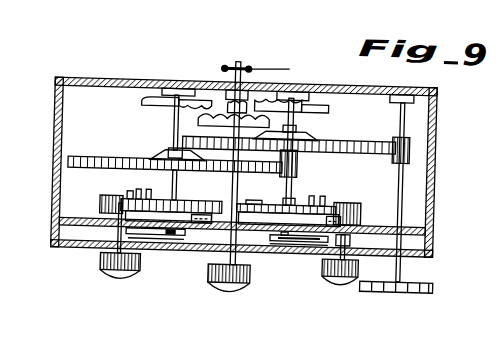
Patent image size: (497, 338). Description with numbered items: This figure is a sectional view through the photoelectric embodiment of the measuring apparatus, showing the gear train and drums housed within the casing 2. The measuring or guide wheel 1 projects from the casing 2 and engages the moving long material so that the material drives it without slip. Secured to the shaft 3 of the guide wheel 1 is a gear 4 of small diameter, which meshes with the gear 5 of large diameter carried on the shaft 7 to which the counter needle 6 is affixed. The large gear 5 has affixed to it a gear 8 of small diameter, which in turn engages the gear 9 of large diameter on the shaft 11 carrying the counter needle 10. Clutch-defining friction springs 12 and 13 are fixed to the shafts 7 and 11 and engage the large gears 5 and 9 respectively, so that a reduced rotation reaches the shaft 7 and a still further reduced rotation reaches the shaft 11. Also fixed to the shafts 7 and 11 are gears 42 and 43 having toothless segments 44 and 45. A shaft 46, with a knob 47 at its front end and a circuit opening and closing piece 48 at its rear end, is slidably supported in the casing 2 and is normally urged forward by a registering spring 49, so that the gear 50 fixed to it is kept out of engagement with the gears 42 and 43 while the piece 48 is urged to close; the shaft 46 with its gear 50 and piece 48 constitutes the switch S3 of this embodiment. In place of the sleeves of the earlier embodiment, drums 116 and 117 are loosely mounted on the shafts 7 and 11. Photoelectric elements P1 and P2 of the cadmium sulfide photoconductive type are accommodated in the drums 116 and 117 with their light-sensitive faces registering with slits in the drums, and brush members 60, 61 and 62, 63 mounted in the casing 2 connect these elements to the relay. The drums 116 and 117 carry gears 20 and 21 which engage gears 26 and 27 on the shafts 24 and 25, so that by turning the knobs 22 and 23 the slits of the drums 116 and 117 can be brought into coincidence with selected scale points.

The measuring or guide wheel 1 is at (383, 290).
The casing 2 is at (437, 127).
The shaft of the guide wheel 3 is at (399, 111).
The gear of small diameter 4 is at (410, 151).
The gear of large diameter 5 is at (360, 151).
The counter needle 6 is at (306, 246).
The shaft 7 is at (302, 114).
The gear of small diameter 8 is at (297, 158).
The gear of large diameter 9 is at (84, 163).
The counter needle 10 is at (160, 237).
The shaft 11 is at (172, 120).
The friction spring 12 is at (305, 131).
The friction spring 13 is at (152, 160).
The gear 20 is at (298, 208).
The gear 21 is at (188, 202).
The knob 22 is at (333, 283).
The knob 23 is at (112, 281).
The shaft 24 is at (346, 241).
The shaft 25 is at (115, 236).
The gear 26 is at (356, 208).
The gear 27 is at (105, 209).
The gear 42 is at (262, 98).
The gear 43 is at (192, 101).
The toothless segment 44 is at (290, 97).
The toothless segment 45 is at (162, 98).
The shaft 46 is at (238, 204).
The knob 47 is at (226, 294).
The circuit opening and closing piece 48 is at (247, 66).
The registering spring 49 is at (233, 103).
The gear 50 is at (200, 123).
The brush member 60 is at (312, 197).
The brush member 61 is at (324, 197).
The brush member 62 is at (150, 194).
The brush member 63 is at (130, 195).
The drum 116 is at (260, 224).
The drum 117 is at (170, 238).
The shaft S3 is at (236, 62).
The photoelectric element P1 is at (336, 211).
The photoelectric element P2 is at (203, 226).